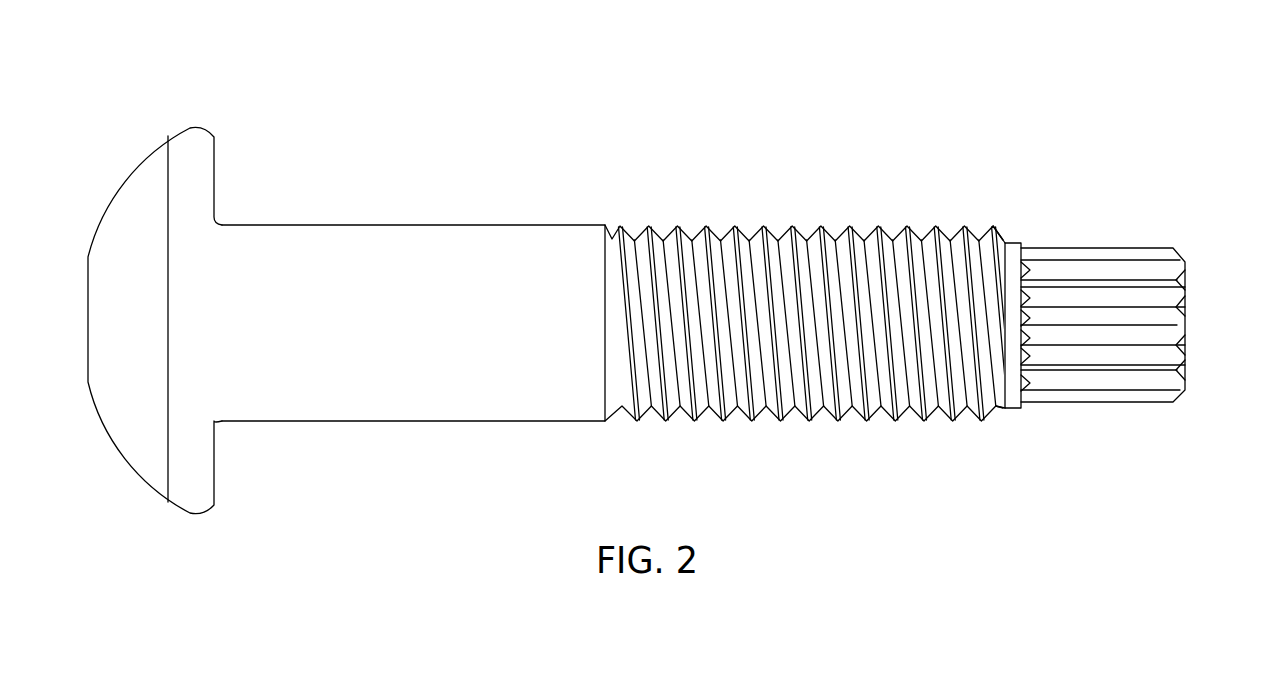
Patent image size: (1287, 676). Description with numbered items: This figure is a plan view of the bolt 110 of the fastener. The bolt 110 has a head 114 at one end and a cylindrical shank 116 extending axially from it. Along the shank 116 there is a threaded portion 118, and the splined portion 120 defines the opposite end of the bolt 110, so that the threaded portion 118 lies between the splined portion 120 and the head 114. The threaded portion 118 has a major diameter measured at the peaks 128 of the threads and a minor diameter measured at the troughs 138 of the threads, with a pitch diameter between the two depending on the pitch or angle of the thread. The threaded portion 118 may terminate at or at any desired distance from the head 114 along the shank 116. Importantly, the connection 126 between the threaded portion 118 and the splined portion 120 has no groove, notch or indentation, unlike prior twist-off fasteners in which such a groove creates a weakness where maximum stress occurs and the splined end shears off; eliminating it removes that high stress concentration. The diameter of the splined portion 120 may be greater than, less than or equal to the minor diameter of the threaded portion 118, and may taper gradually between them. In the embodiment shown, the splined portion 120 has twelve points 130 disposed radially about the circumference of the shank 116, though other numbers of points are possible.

The bolt 110 is at (788, 126).
The head 114 is at (176, 490).
The cylindrical shank 116 is at (503, 212).
The threaded portion 118 is at (807, 230).
The troughs of the threads 138 is at (893, 242).
The peaks of the threads 128 is at (996, 240).
The connection 126 is at (1010, 409).
The splined portion 120 is at (1103, 358).
The points 130 is at (1148, 283).